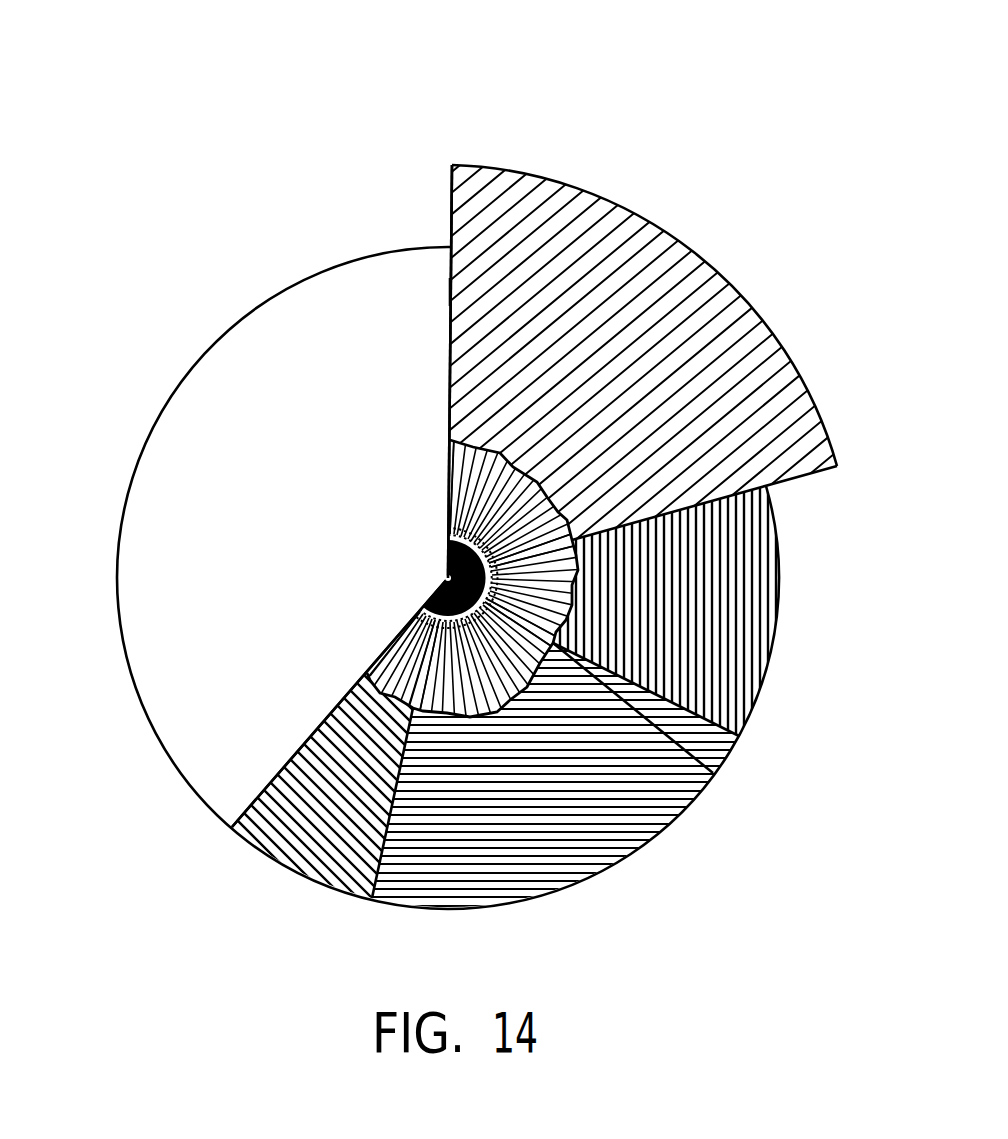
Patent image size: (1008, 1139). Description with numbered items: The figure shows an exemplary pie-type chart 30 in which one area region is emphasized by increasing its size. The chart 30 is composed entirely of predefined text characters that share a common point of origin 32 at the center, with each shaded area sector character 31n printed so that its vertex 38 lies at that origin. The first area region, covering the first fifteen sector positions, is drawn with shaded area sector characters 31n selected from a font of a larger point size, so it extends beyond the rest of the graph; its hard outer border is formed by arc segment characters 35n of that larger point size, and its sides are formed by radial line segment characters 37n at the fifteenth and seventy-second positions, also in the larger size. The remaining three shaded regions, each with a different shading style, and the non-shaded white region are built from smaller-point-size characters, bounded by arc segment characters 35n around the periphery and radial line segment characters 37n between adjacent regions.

The chart 30 is at (458, 112).
The shaded area sector character 31n is at (543, 265).
The arc segment character 35n is at (805, 356).
The radial line segment character 37n is at (450, 372).
The common point of origin 32 is at (438, 571).
The vertex 38 is at (436, 579).